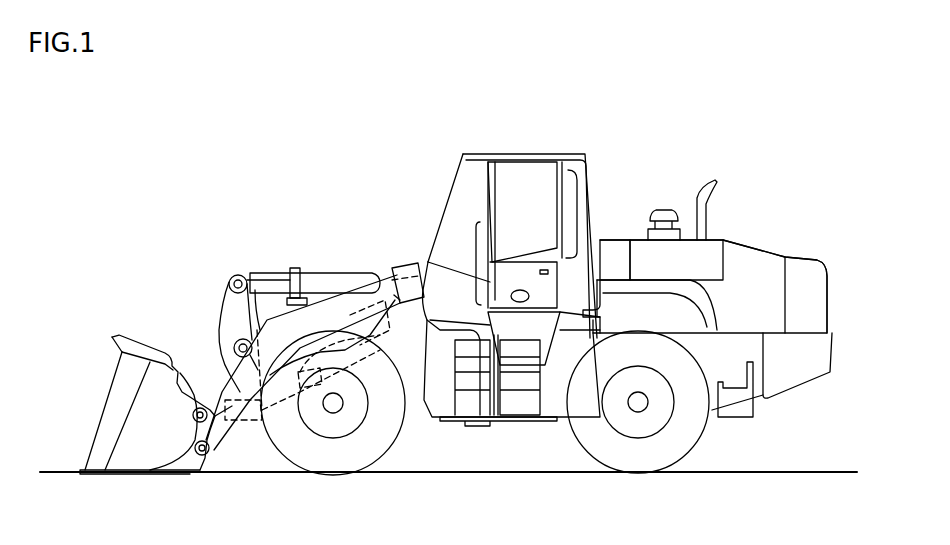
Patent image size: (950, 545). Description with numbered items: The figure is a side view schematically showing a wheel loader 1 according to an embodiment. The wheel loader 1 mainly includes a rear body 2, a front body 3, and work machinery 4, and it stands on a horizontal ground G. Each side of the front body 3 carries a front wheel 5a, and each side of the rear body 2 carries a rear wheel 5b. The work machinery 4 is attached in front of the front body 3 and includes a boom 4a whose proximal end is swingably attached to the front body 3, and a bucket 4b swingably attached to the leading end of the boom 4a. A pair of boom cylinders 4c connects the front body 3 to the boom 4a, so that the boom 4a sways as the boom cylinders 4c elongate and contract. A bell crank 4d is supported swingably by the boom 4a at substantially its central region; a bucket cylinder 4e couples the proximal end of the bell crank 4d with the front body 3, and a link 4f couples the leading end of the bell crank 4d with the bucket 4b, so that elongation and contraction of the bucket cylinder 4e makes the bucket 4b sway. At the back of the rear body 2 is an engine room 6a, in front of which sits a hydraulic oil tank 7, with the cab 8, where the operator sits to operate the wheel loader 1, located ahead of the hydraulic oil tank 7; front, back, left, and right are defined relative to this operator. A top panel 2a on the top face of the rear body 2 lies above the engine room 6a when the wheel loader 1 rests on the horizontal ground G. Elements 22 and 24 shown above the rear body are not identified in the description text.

The wheel loader 1 is at (690, 118).
The rear body 2 is at (800, 365).
The top panel 2a is at (770, 246).
The front body 3 is at (429, 398).
The work machinery 4 is at (210, 324).
The boom 4a is at (276, 316).
The bucket 4b is at (140, 432).
The boom cylinder 4c is at (383, 352).
The bell crank 4d is at (230, 318).
The bucket cylinder 4e is at (332, 270).
The link 4f is at (225, 446).
The front wheel 5a is at (340, 452).
The rear wheel 5b is at (641, 452).
The engine room 6a is at (714, 254).
The hydraulic oil tank 7 is at (612, 238).
The cab 8 is at (548, 142).
The exhaust pipe 22 is at (702, 193).
The pre-cleaner 24 is at (660, 208).
The horizontal ground G is at (838, 474).